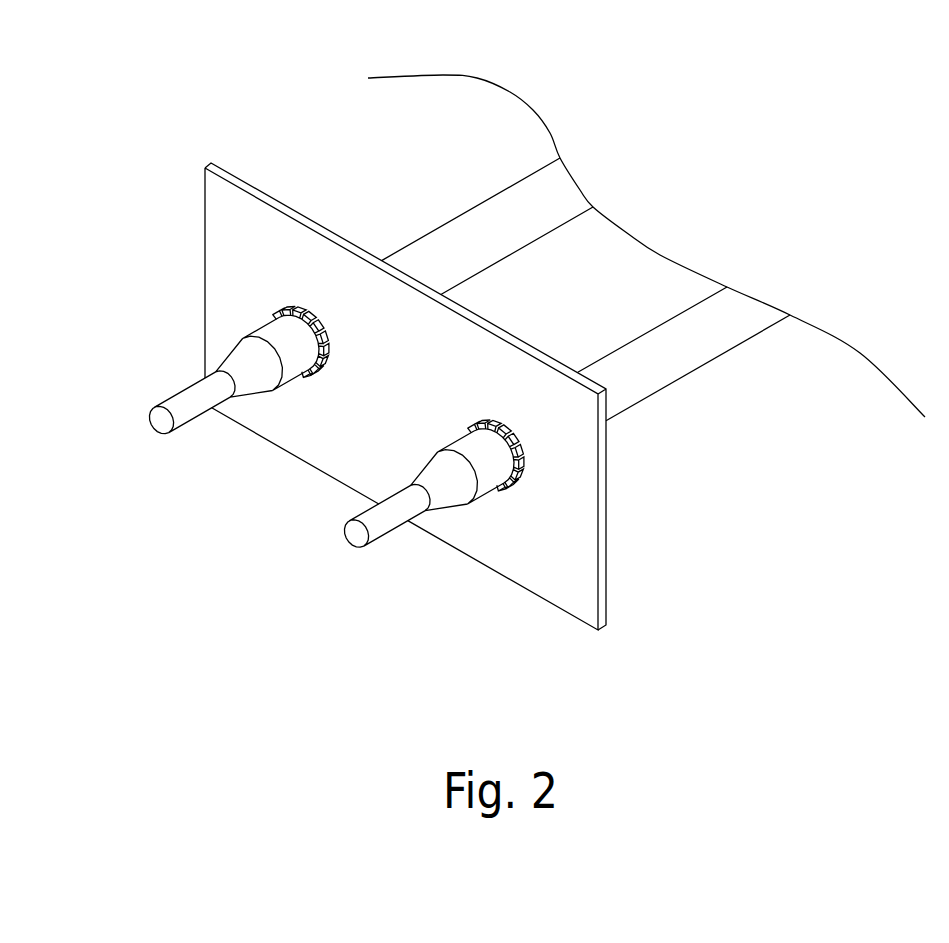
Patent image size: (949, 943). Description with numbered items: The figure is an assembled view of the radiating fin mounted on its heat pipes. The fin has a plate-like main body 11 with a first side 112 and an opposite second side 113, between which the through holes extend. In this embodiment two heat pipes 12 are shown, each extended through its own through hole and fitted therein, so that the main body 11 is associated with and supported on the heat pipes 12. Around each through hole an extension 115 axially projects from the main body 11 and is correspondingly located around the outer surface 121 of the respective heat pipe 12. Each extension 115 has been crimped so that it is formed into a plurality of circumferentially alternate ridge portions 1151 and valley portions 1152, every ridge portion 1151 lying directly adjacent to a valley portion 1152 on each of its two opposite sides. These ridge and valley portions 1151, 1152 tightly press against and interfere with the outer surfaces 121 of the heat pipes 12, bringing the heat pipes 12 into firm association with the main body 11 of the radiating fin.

The main body 11 is at (257, 163).
The first side 112 is at (560, 578).
The second side 113 is at (607, 593).
The extension 115 is at (740, 438).
The ridge portion 1151 is at (517, 433).
The valley portion 1152 is at (522, 457).
The heat pipe 12 is at (755, 343).
The outer surface 121 is at (700, 358).